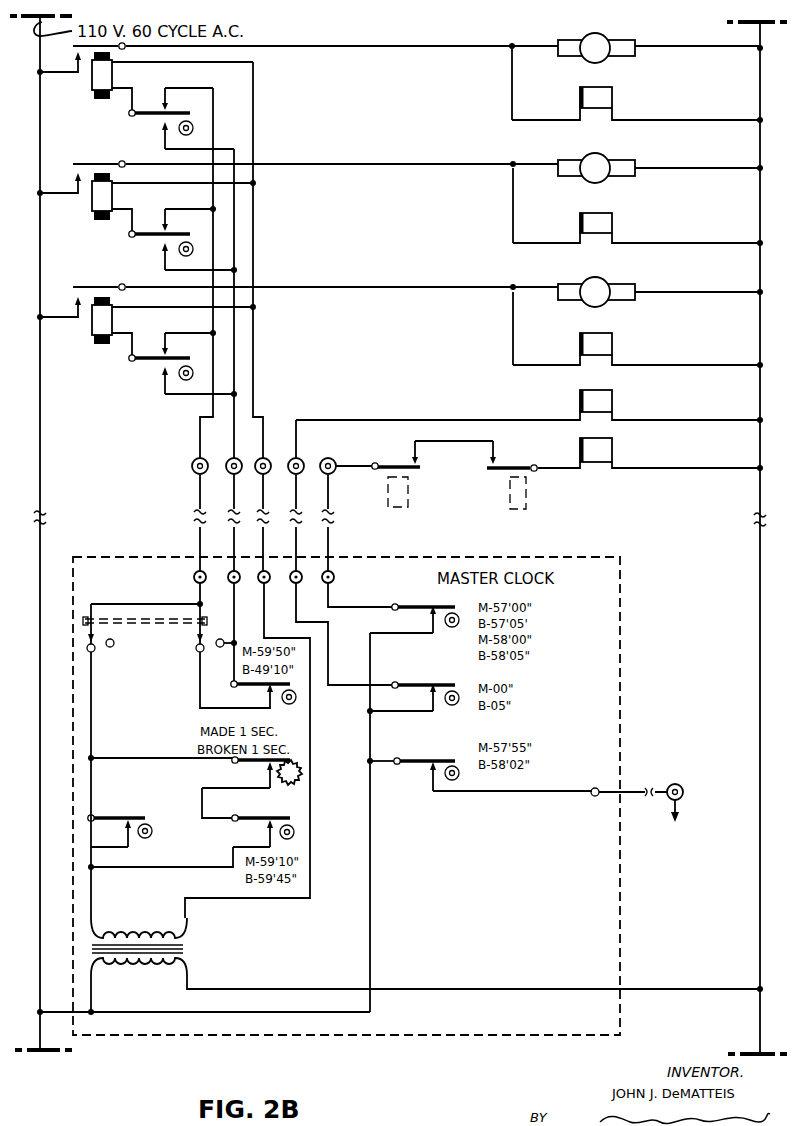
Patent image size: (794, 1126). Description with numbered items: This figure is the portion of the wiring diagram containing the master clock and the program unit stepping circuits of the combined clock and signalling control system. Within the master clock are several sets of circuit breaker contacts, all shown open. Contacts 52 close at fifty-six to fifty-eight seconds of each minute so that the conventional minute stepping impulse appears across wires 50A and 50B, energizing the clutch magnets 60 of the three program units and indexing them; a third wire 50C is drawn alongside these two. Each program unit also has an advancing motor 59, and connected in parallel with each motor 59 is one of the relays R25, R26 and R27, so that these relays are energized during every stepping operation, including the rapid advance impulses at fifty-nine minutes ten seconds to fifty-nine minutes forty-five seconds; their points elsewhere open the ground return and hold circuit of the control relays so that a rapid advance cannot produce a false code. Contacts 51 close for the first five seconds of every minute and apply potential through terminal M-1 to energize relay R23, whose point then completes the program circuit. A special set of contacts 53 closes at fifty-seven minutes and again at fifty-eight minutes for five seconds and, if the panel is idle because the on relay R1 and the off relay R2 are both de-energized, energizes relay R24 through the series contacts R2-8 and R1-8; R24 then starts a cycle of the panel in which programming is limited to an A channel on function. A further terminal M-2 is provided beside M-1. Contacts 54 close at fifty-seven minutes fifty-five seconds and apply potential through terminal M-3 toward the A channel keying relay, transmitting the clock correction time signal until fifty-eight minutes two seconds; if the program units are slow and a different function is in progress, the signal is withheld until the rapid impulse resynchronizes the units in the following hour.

The clutch magnets 60 is at (92, 84).
The program unit advancing motors 59 is at (620, 52).
The relay R25 is at (608, 99).
The relay R26 is at (608, 223).
The relay R27 is at (608, 344).
The relay R23 is at (608, 401).
The relay R24 is at (608, 450).
The wire 50A is at (196, 460).
The wire 50B is at (229, 460).
The terminal 50C is at (260, 460).
The terminal M-1 is at (305, 453).
The terminal M-2 is at (334, 460).
The terminal M-3 is at (681, 787).
The relay contact R2-8 is at (421, 468).
The relay contact R1-8 is at (501, 462).
The relay R2 is at (404, 509).
The on relay R1 is at (524, 511).
The master clock contacts 53 is at (459, 615).
The master clock contacts 51 is at (459, 693).
The master clock contacts 54 is at (462, 768).
The master clock contacts 52 is at (149, 826).